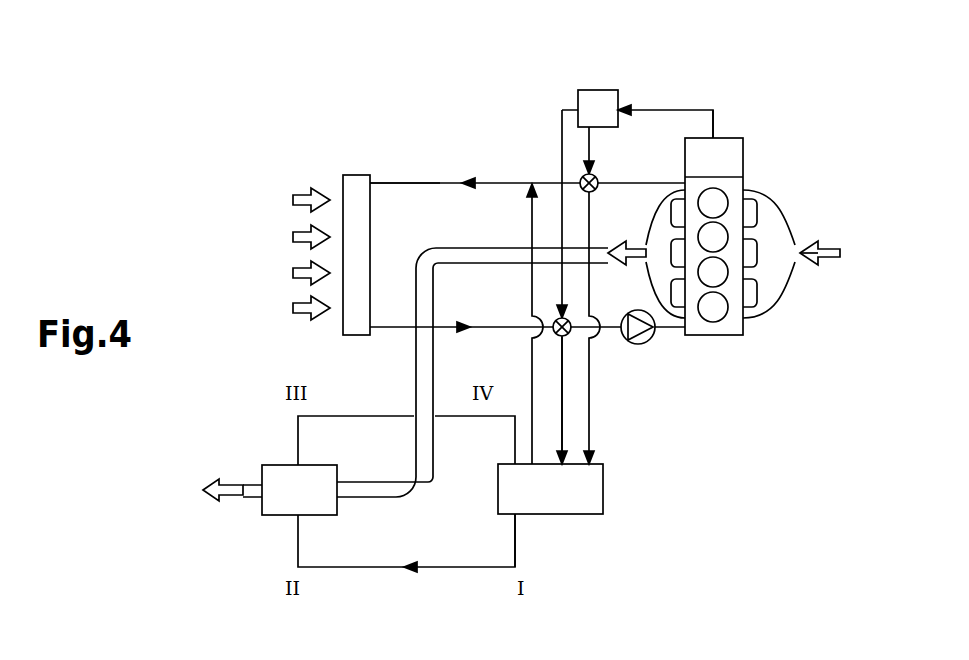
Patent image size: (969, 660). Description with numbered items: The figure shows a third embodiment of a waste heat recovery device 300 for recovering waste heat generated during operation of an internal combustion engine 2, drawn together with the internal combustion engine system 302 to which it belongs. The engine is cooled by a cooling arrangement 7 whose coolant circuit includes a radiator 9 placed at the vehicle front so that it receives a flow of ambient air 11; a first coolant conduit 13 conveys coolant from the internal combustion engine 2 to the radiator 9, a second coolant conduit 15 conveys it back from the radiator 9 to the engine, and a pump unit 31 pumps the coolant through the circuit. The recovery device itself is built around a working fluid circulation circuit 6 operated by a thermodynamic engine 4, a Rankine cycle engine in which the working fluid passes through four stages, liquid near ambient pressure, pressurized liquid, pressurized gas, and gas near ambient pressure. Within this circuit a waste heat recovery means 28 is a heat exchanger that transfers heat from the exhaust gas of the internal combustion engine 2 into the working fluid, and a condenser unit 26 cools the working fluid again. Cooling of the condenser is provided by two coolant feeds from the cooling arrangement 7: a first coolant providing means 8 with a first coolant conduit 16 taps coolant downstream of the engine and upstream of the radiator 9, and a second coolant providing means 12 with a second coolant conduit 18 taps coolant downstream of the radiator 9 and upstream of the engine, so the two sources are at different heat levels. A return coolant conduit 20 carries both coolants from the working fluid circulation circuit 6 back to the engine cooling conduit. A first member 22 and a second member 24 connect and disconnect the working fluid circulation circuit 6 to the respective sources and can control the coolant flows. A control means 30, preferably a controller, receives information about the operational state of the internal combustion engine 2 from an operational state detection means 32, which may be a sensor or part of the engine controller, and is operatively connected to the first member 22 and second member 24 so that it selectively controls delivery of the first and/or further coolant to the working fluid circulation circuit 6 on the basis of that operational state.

The internal combustion engine 2 is at (732, 190).
The thermodynamic engine 4 is at (543, 558).
The working fluid circulation circuit 6 is at (440, 570).
The cooling arrangement 7 is at (418, 173).
The first coolant providing means 8 is at (603, 338).
The radiator 9 is at (352, 180).
The flow of ambient air 11 is at (293, 200).
The second coolant providing means 12 is at (565, 435).
The first coolant conduit 13 is at (513, 183).
The second coolant conduit 15 is at (490, 330).
The first coolant conduit 16 is at (591, 428).
The second coolant conduit 18 is at (563, 393).
The return coolant conduit 20 is at (534, 378).
The first member 22 is at (597, 192).
The second member 24 is at (565, 337).
The condenser unit 26 is at (603, 505).
The waste heat recovery means 28 is at (281, 472).
The control means 30 is at (585, 93).
The pump unit 31 is at (652, 340).
The operational state detection means 32 is at (737, 152).
The waste heat recovery device 300 is at (770, 98).
The charge air supply 302 is at (850, 125).